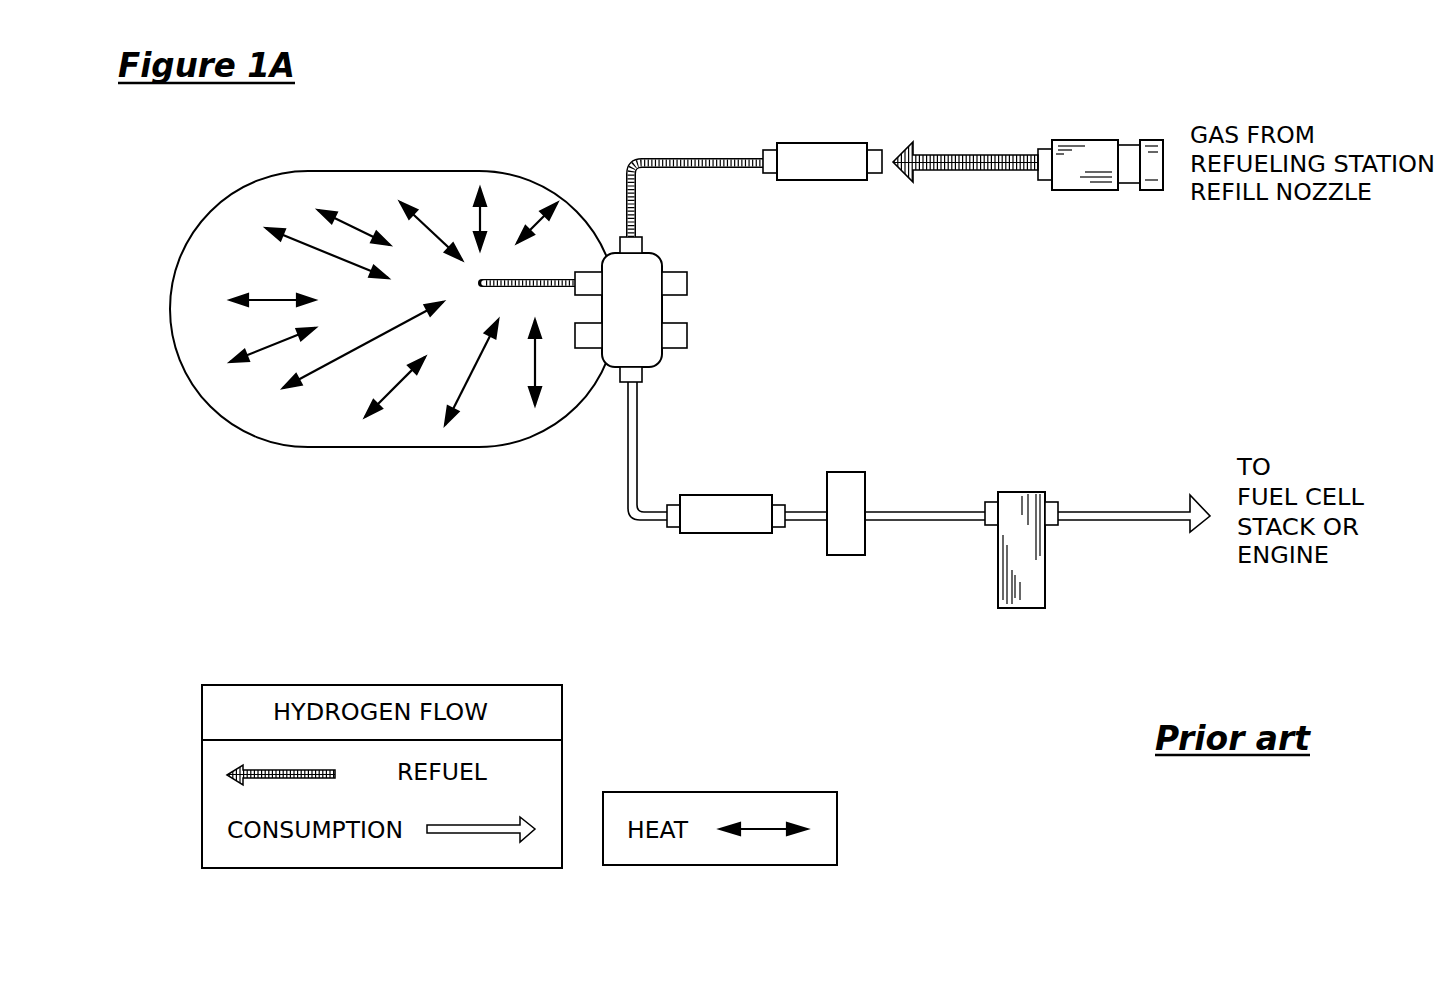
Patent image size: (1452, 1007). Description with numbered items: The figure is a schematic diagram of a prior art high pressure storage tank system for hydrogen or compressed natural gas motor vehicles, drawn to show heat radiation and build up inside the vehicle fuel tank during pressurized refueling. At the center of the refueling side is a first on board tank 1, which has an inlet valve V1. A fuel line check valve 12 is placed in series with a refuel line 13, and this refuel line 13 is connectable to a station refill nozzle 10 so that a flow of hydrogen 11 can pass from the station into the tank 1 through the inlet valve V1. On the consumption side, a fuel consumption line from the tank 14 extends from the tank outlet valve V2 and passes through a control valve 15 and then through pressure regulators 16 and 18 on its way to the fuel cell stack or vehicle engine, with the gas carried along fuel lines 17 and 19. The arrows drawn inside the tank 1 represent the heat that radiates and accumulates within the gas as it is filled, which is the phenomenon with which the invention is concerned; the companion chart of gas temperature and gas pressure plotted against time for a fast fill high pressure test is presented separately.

The first on board tank 1 is at (190, 383).
The station refill nozzle 10 is at (1085, 190).
The flow of hydrogen 11 is at (967, 170).
The fuel line check valve 12 is at (818, 143).
The refuel line 13 is at (692, 158).
The fuel consumption line from the tank 14 is at (628, 498).
The control valve 15 is at (727, 533).
The pressure regulator 16 is at (847, 555).
The fuel line 17 is at (918, 512).
The pressure regulator 18 is at (1020, 608).
The fuel line 19 is at (1133, 507).
The inlet valve V1 is at (673, 271).
The tank outlet valve V2 is at (673, 348).